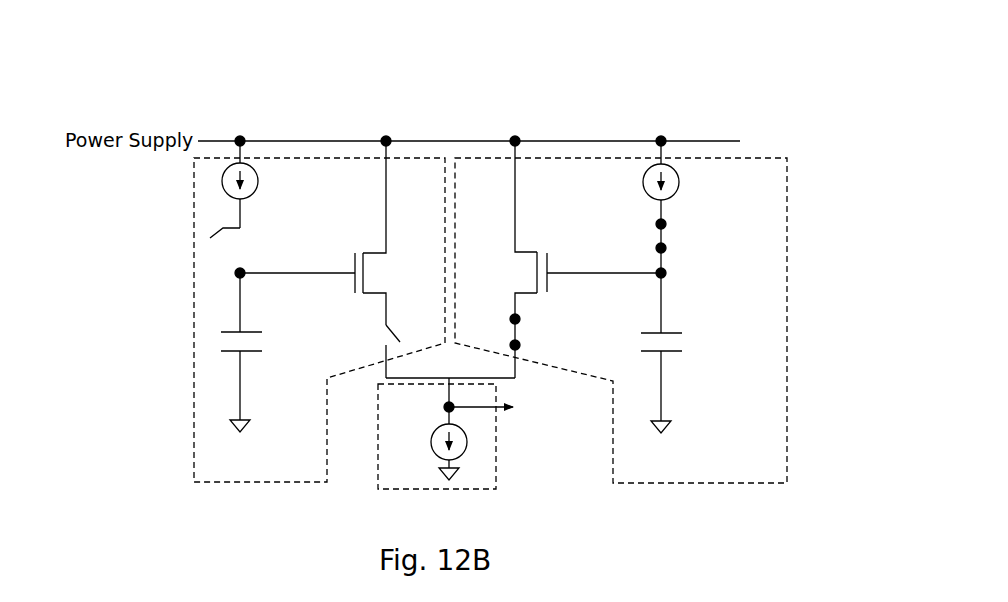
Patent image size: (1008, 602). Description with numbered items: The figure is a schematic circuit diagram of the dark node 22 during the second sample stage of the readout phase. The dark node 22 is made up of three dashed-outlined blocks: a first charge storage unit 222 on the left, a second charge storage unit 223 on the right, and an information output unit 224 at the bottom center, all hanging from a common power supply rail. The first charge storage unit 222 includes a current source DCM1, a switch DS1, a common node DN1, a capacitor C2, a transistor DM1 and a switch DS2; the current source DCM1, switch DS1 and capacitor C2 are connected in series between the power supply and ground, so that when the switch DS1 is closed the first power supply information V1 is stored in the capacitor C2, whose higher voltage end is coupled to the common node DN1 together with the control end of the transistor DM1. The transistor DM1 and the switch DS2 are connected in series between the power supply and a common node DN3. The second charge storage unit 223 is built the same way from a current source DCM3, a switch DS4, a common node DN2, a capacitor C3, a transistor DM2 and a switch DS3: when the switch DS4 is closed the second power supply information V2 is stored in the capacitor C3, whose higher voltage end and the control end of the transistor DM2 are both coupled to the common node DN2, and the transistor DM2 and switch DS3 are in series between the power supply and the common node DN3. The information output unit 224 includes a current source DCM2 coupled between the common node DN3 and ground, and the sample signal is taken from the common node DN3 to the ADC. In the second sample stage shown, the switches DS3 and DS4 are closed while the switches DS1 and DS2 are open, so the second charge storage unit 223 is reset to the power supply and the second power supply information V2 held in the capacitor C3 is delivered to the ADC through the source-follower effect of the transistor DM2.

The dark node 22 is at (687, 96).
The first charge storage unit 222 is at (194, 284).
The second charge storage unit 223 is at (787, 298).
The information output unit 224 is at (410, 490).
The current source DCM1 is at (258, 180).
The switch DS1 is at (249, 237).
The common node DN1 is at (295, 282).
The first power supply information V1 is at (236, 346).
The capacitor C2 is at (253, 351).
The transistor DM1 is at (385, 272).
The switch DS2 is at (380, 337).
The transistor DM2 is at (518, 274).
The switch DS3 is at (528, 336).
The current source DCM3 is at (679, 180).
The switch DS4 is at (670, 237).
The common node DN2 is at (629, 278).
The second power supply information V2 is at (657, 347).
The capacitor C3 is at (672, 351).
The common node DN3 is at (427, 401).
The element ADC is at (506, 408).
The current source DCM2 is at (467, 447).